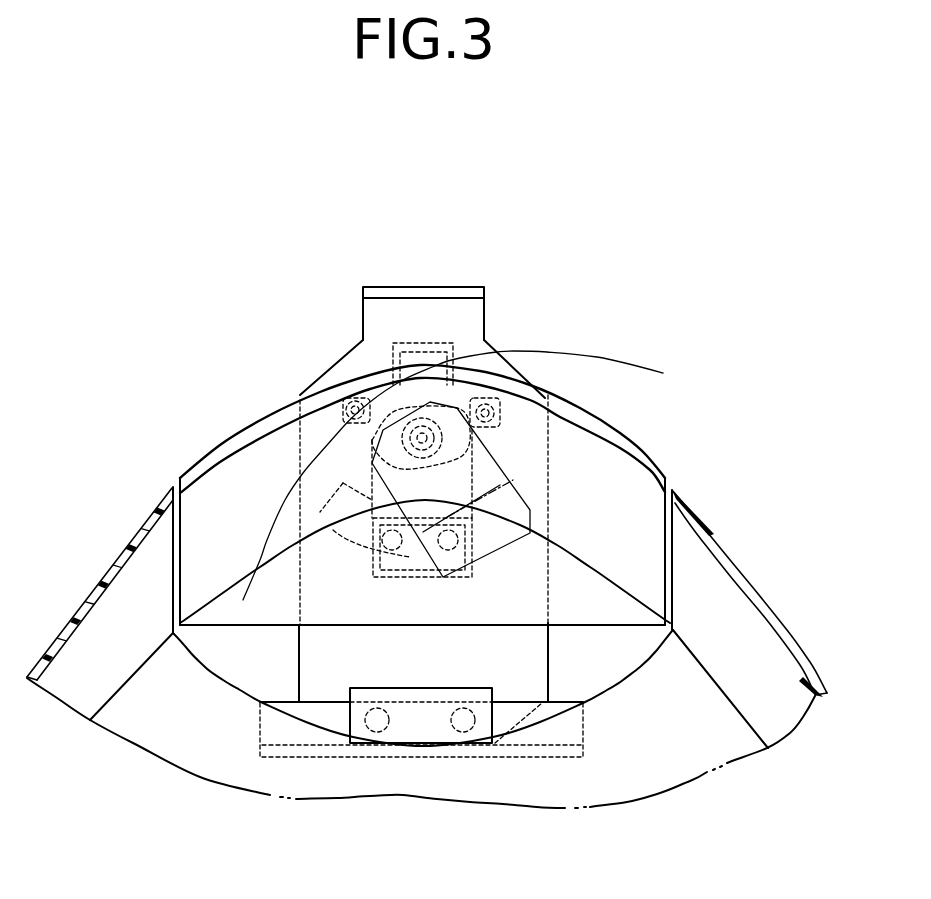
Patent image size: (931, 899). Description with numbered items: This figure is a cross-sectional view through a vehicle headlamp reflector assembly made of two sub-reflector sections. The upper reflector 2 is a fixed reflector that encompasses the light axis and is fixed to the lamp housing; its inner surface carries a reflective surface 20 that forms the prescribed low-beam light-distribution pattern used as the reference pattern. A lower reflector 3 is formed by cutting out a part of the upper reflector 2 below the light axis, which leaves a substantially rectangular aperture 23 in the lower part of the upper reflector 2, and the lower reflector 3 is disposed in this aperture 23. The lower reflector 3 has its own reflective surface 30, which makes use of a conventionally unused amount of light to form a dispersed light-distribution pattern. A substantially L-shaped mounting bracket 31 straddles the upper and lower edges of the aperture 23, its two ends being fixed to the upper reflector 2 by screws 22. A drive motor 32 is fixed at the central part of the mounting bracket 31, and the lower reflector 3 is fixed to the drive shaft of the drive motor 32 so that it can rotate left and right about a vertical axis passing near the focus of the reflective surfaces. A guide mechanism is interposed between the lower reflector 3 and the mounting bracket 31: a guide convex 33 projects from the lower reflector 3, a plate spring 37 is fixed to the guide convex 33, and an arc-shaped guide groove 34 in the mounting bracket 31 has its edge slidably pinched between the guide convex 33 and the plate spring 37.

The upper reflector 2 is at (110, 543).
The reflective surface 20 is at (62, 640).
The lower reflector 3 is at (613, 431).
The aperture 23 is at (665, 528).
The reflective surface 30 is at (190, 483).
The mounting bracket 31 is at (548, 653).
The drive motor 32 is at (493, 348).
The guide convex 33 is at (408, 577).
The guide groove 34 is at (320, 512).
The plate spring 37 is at (372, 577).
The screws 22 is at (452, 722).